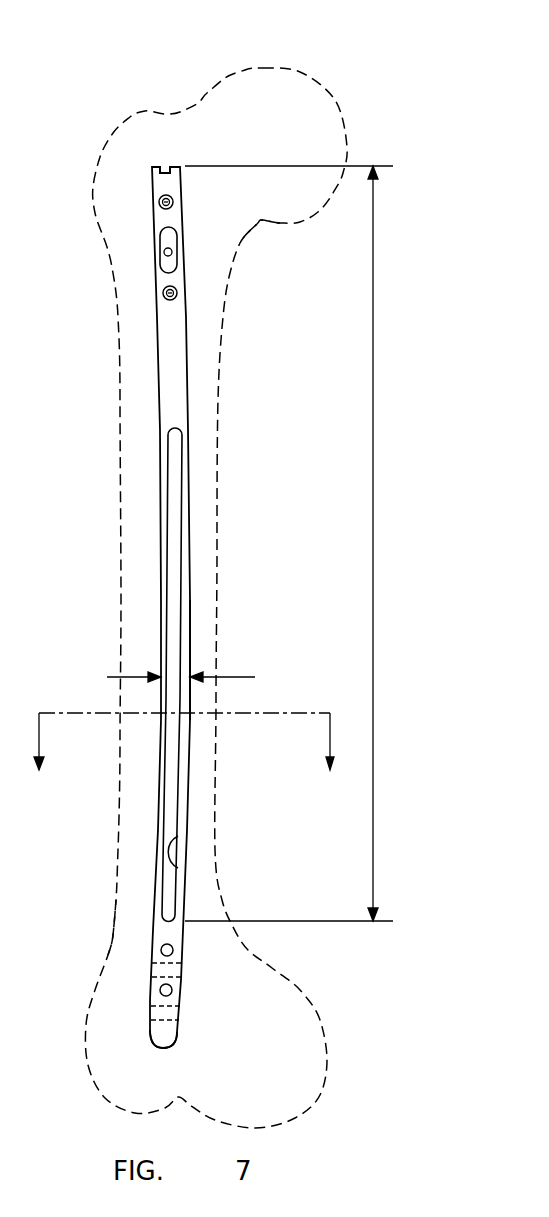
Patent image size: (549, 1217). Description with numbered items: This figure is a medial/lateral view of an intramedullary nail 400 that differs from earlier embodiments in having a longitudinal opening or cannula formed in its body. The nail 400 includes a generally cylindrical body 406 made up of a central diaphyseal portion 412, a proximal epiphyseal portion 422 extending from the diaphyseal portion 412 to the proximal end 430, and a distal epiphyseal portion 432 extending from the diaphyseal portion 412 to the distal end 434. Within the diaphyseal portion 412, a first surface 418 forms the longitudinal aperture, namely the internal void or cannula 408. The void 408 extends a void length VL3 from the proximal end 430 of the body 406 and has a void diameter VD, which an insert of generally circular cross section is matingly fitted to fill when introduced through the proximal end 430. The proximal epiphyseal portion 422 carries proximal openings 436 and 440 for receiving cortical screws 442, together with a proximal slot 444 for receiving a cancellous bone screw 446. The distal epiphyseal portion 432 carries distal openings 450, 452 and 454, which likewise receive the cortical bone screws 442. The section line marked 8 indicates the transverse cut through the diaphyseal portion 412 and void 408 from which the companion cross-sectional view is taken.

The intramedullary nail 400 is at (349, 77).
The proximal epiphyseal portion 422 is at (272, 237).
The distal epiphyseal portion 432 is at (112, 938).
The body 406 is at (192, 473).
The proximal end 430 is at (153, 167).
The distal end 434 is at (162, 1046).
The diaphyseal portion 412 is at (192, 548).
The void 408 is at (192, 623).
The first surface 418 is at (176, 862).
The proximal opening 436 is at (157, 193).
The proximal opening 440 is at (160, 280).
The cortical screws 442 is at (163, 203).
The proximal slot 444 is at (162, 237).
The cancellous bone screw 446 is at (172, 252).
The distal opening 452 is at (185, 950).
The distal opening 450 is at (183, 990).
The distal opening 454 is at (152, 1010).
The void length VL3 is at (293, 543).
The void diameter VD is at (203, 679).
The section line 8- 8 is at (184, 760).